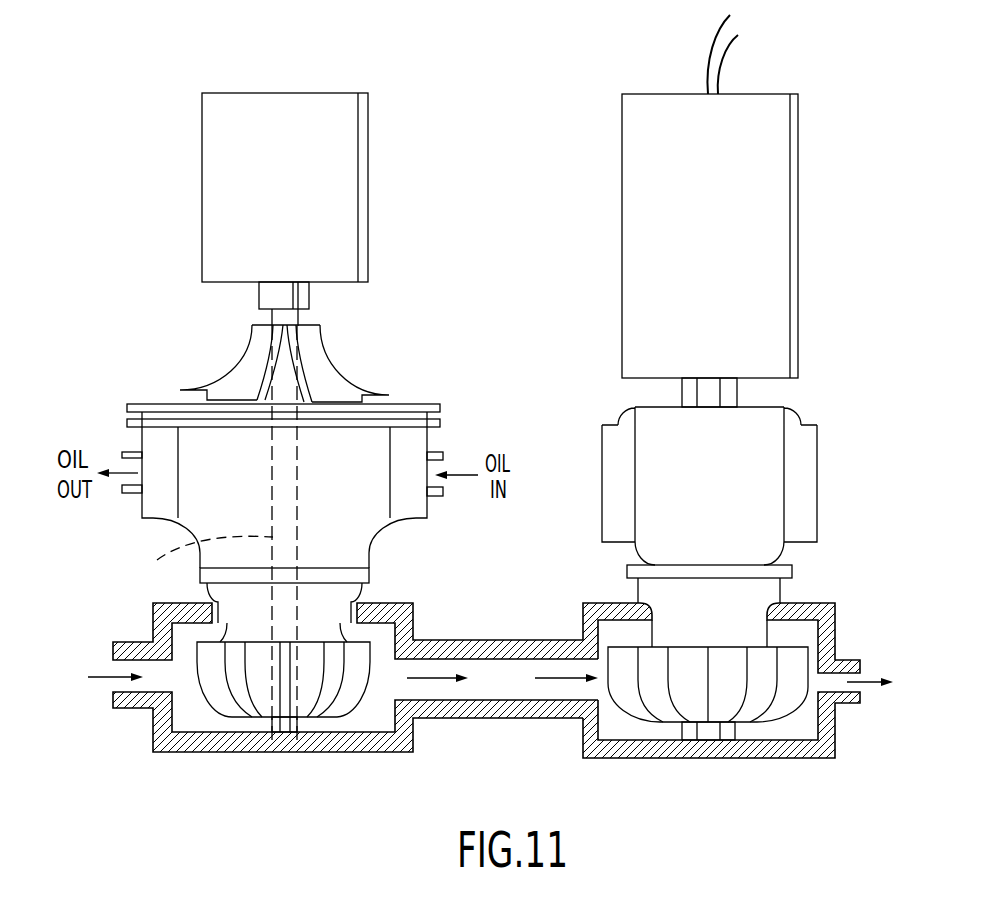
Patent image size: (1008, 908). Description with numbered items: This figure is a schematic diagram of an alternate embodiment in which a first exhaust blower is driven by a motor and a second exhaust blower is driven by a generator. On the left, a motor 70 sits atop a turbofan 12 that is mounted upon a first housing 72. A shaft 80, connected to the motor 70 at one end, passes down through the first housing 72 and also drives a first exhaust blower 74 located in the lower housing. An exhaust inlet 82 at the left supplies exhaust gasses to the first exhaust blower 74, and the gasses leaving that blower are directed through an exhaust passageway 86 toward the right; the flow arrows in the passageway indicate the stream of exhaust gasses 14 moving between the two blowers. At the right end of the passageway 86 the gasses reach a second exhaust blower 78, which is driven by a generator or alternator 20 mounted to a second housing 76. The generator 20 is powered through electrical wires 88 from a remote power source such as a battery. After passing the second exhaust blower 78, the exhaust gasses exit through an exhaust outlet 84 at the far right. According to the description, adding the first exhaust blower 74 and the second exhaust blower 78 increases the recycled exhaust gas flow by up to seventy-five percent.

The motor 70 is at (357, 152).
The turbofan 12 is at (340, 372).
The generator or alternator 20 is at (787, 143).
The electrical wires 88 is at (740, 45).
The second housing 76 is at (775, 497).
The first housing 72 is at (362, 538).
The shaft 80 is at (201, 556).
The exhaust passageway 86 is at (495, 640).
The exhaust inlet 82 is at (105, 677).
The first exhaust blower 74 is at (242, 712).
The working fluid flow 14 is at (432, 678).
The second exhaust blower 78 is at (760, 712).
The exhaust outlet 84 is at (863, 690).